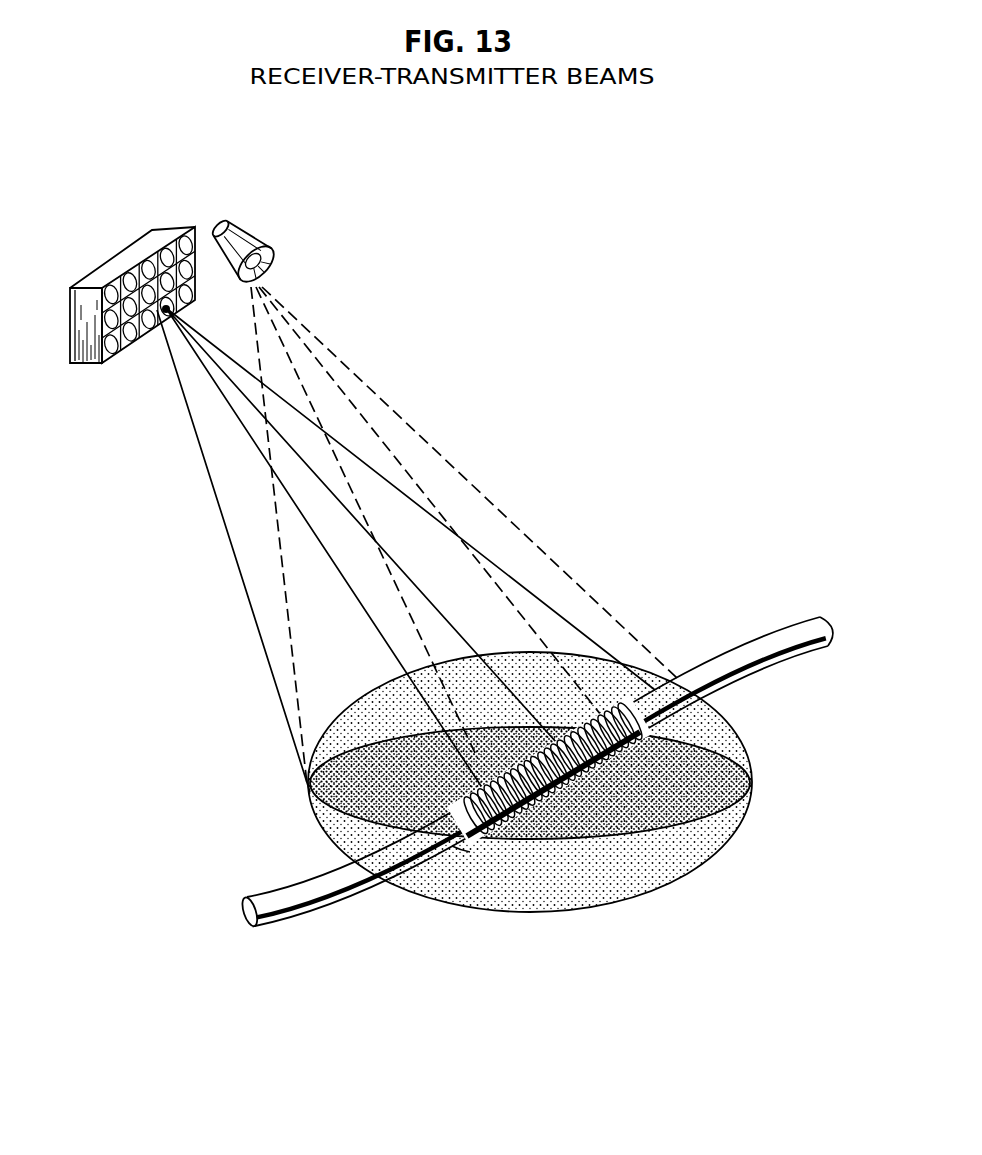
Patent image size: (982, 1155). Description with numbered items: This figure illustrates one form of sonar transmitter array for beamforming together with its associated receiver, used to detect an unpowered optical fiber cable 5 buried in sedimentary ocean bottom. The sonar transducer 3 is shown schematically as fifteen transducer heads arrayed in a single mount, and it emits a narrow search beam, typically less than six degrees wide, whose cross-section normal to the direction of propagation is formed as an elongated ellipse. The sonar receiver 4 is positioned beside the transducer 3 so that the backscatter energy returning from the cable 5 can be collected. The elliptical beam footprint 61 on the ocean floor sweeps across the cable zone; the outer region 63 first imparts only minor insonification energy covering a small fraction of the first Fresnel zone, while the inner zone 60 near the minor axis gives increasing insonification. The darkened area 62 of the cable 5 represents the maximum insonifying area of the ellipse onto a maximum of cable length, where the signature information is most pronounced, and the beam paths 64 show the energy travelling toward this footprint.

The sonar transducer 3 is at (173, 229).
The sonar receiver 4 is at (257, 239).
The cable 5 is at (807, 625).
The inner focal zone 60 is at (713, 800).
The beam coverage disk 61 is at (753, 783).
The shadow region 62 is at (462, 850).
The outer coverage region 63 is at (622, 888).
The transmitter beams 64 is at (376, 396).